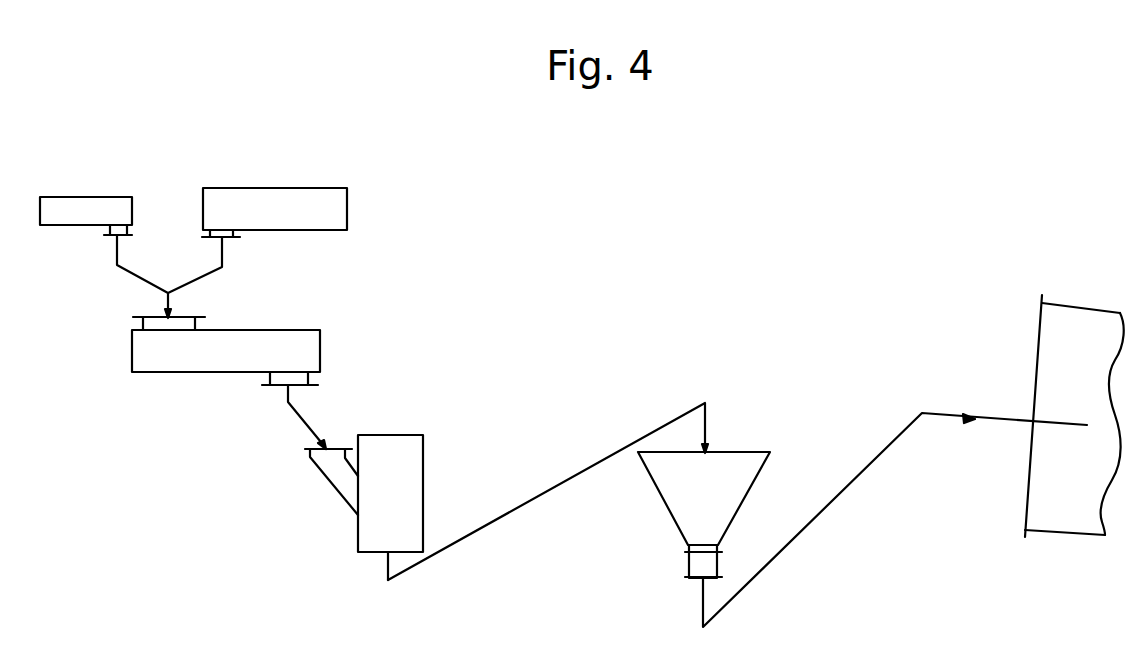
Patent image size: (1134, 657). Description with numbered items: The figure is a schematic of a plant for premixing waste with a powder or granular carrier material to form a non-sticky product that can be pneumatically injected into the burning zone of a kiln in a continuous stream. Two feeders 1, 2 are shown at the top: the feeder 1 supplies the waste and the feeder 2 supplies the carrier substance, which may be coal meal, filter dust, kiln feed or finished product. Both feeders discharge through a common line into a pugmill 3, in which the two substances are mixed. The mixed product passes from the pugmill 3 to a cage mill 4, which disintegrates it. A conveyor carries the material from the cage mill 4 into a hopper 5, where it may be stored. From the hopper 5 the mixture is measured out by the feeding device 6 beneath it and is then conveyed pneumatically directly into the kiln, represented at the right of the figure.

The feeder 1 is at (82, 208).
The feeder 2 is at (267, 207).
The pugmill 3 is at (202, 358).
The cage mill 4 is at (370, 512).
The hopper 5 is at (742, 462).
The feeding device 6 is at (700, 563).